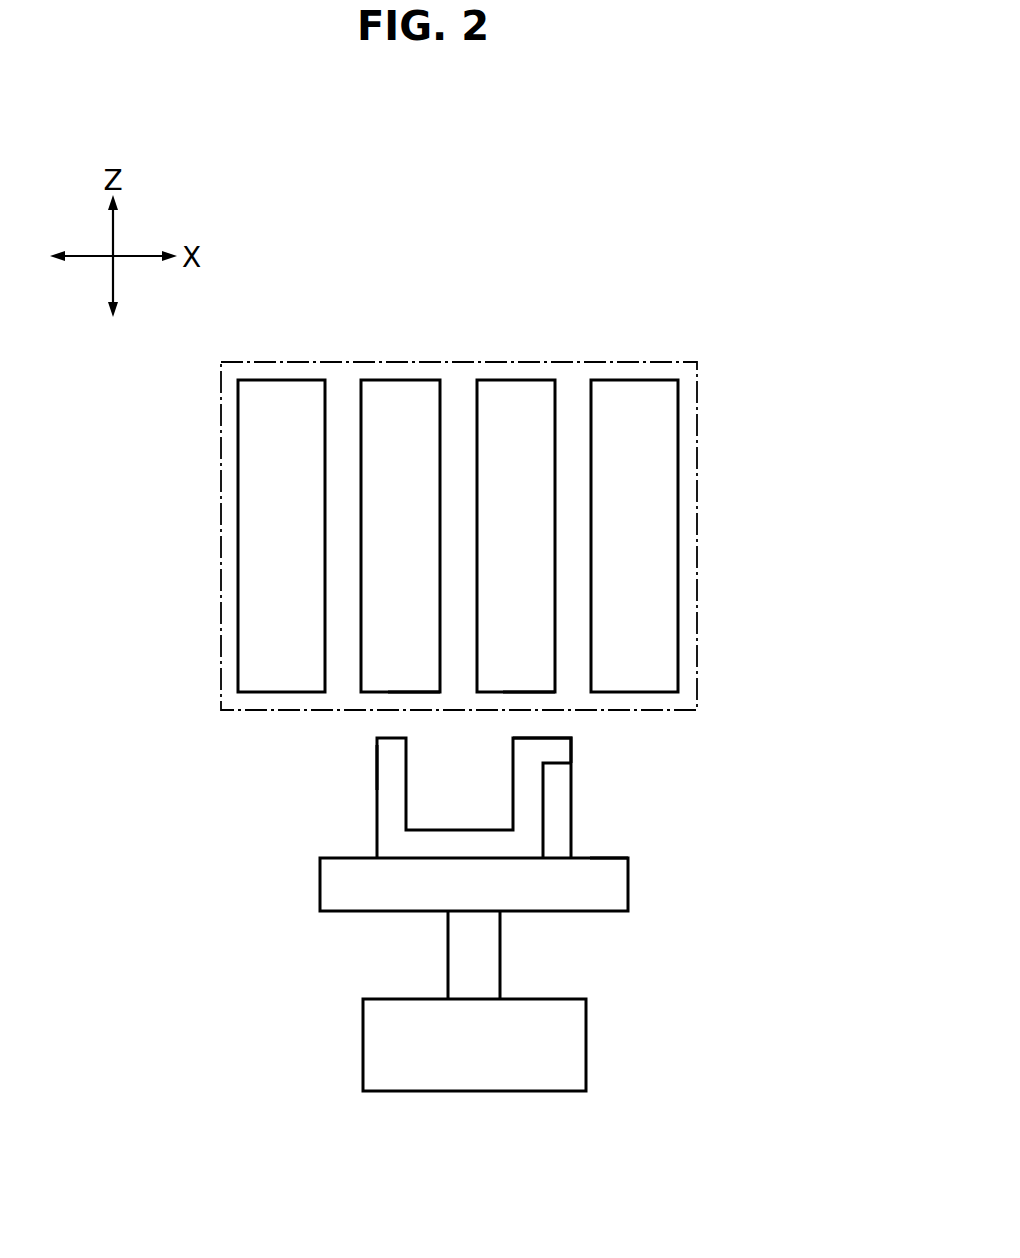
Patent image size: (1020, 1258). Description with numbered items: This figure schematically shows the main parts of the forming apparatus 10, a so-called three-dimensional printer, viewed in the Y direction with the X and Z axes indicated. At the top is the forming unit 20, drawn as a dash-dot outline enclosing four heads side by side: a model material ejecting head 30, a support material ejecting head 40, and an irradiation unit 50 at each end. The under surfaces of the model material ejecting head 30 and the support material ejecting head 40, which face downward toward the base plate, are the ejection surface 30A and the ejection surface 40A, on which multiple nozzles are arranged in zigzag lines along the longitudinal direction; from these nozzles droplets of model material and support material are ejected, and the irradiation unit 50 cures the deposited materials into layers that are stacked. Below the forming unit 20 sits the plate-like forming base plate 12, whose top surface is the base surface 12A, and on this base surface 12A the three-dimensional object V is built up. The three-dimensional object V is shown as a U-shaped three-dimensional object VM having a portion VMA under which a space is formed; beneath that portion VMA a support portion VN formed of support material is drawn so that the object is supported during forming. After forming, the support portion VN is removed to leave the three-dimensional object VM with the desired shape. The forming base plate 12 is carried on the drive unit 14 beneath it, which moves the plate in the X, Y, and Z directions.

The forming apparatus 10 is at (727, 286).
The forming unit 20 is at (698, 537).
The model material ejecting head 30 is at (401, 380).
The support material ejecting head 40 is at (519, 380).
The irradiation unit 50 is at (281, 380).
The ejection surface 30A is at (401, 688).
The ejection surface 40A is at (517, 688).
The three-dimensional object V is at (377, 765).
The three-dimensional object VM is at (376, 820).
The portion under which a space is formed VMA is at (565, 751).
The support portion VN is at (565, 800).
The forming base plate 12 is at (630, 883).
The base surface 12A is at (630, 857).
The drive unit 14 is at (588, 1044).